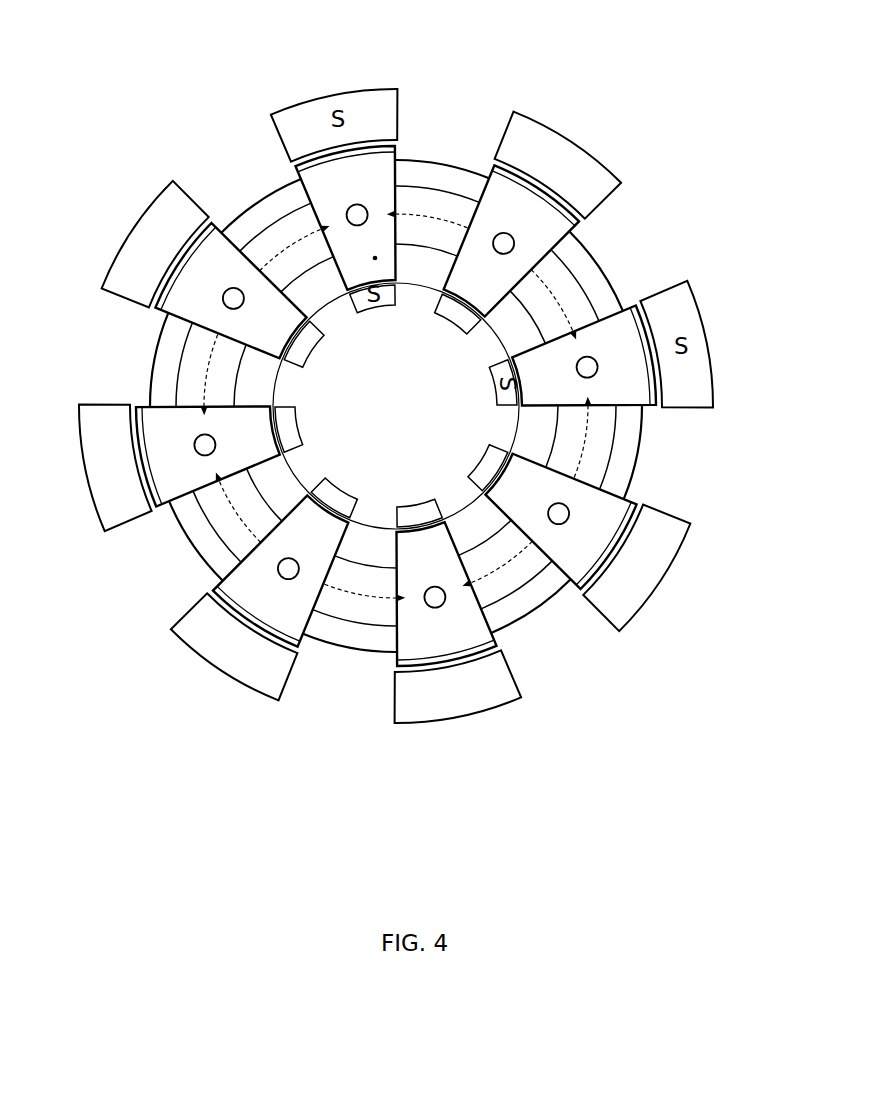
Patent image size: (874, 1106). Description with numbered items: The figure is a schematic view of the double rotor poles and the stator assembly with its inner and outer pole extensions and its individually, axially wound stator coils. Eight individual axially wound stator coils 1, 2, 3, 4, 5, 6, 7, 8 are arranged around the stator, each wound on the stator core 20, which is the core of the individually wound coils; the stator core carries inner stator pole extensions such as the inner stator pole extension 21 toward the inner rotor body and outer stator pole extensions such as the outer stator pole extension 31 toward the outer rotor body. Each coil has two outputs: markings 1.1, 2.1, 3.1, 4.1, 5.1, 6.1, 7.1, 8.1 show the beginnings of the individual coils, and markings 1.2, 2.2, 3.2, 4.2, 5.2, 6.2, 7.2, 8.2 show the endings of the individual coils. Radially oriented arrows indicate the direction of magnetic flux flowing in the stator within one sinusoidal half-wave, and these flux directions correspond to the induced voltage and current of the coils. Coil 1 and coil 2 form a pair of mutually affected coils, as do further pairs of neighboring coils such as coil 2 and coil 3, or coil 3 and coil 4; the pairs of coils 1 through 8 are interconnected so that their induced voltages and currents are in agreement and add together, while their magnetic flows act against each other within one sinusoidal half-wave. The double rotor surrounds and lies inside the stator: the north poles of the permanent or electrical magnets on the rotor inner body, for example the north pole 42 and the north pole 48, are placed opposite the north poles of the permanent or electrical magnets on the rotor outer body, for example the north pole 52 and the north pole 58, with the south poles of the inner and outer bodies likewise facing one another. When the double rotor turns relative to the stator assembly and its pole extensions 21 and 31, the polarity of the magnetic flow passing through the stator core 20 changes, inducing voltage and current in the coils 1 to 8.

The stator core 20 is at (373, 213).
The inner stator pole extension 21 is at (375, 258).
The outer stator pole extension 31 is at (333, 173).
The permanent or electrical magnet pole of the rotor inner body 42 is at (467, 317).
The permanent or electrical magnet pole of the rotor inner body 48 is at (295, 355).
The permanent or electrical magnet pole of the rotor outer body 52 is at (525, 138).
The permanent or electrical magnet pole of the rotor outer body 58 is at (170, 220).
The individual axially wound stator coil 1 is at (283, 229).
The beginning of individual axially wound stator coil 1.1 is at (253, 233).
The ending of individual axially wound stator coil 1.2 is at (282, 208).
The individual axially wound stator coil 2 is at (438, 177).
The beginning of individual axially wound stator coil 2.1 is at (422, 185).
The ending of individual axially wound stator coil 2.2 is at (455, 188).
The individual axially wound stator coil 3 is at (582, 268).
The beginning of individual axially wound stator coil 3.1 is at (587, 238).
The ending of individual axially wound stator coil 3.2 is at (587, 285).
The individual axially wound stator coil 4 is at (627, 448).
The beginning of individual axially wound stator coil 4.1 is at (615, 428).
The ending of individual axially wound stator coil 4.2 is at (608, 462).
The individual axially wound stator coil 5 is at (528, 593).
The beginning of individual axially wound stator coil 5.1 is at (533, 578).
The ending of individual axially wound stator coil 5.2 is at (510, 595).
The individual axially wound stator coil 6 is at (357, 635).
The beginning of individual axially wound stator coil 6.1 is at (373, 625).
The ending of individual axially wound stator coil 6.2 is at (340, 620).
The individual axially wound stator coil 7 is at (203, 540).
The beginning of individual axially wound stator coil 7.1 is at (223, 548).
The ending of individual axially wound stator coil 7.2 is at (215, 512).
The individual axially wound stator coil 8 is at (167, 360).
The beginning of individual axially wound stator coil 8.1 is at (180, 380).
The ending of individual axially wound stator coil 8.2 is at (187, 347).